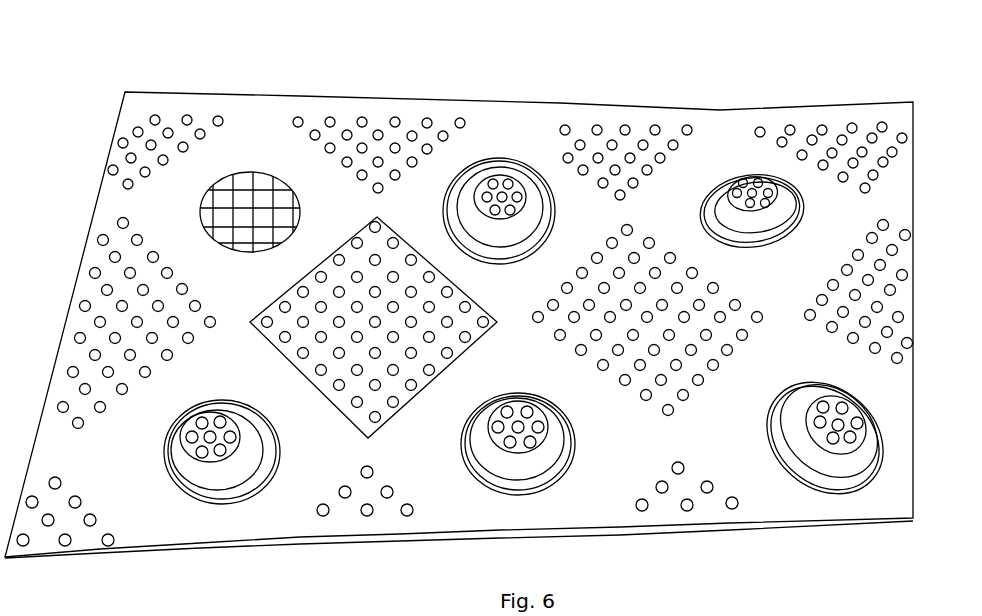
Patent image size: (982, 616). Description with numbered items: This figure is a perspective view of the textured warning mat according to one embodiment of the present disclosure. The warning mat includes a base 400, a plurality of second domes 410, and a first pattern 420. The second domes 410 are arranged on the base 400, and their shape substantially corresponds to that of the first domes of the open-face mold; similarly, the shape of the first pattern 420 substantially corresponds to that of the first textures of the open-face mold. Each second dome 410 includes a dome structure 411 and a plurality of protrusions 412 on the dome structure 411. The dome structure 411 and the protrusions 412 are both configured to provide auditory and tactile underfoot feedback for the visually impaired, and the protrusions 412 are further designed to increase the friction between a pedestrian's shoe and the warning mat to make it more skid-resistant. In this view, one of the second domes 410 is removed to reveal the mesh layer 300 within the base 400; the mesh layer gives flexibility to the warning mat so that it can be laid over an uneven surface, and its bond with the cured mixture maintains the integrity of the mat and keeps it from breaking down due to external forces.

The base 400 is at (725, 142).
The mesh patch 300 is at (260, 173).
The second dome 410 is at (500, 158).
The dome structure 411 is at (470, 200).
The protrusions 412 is at (513, 197).
The first pattern 420 is at (248, 323).